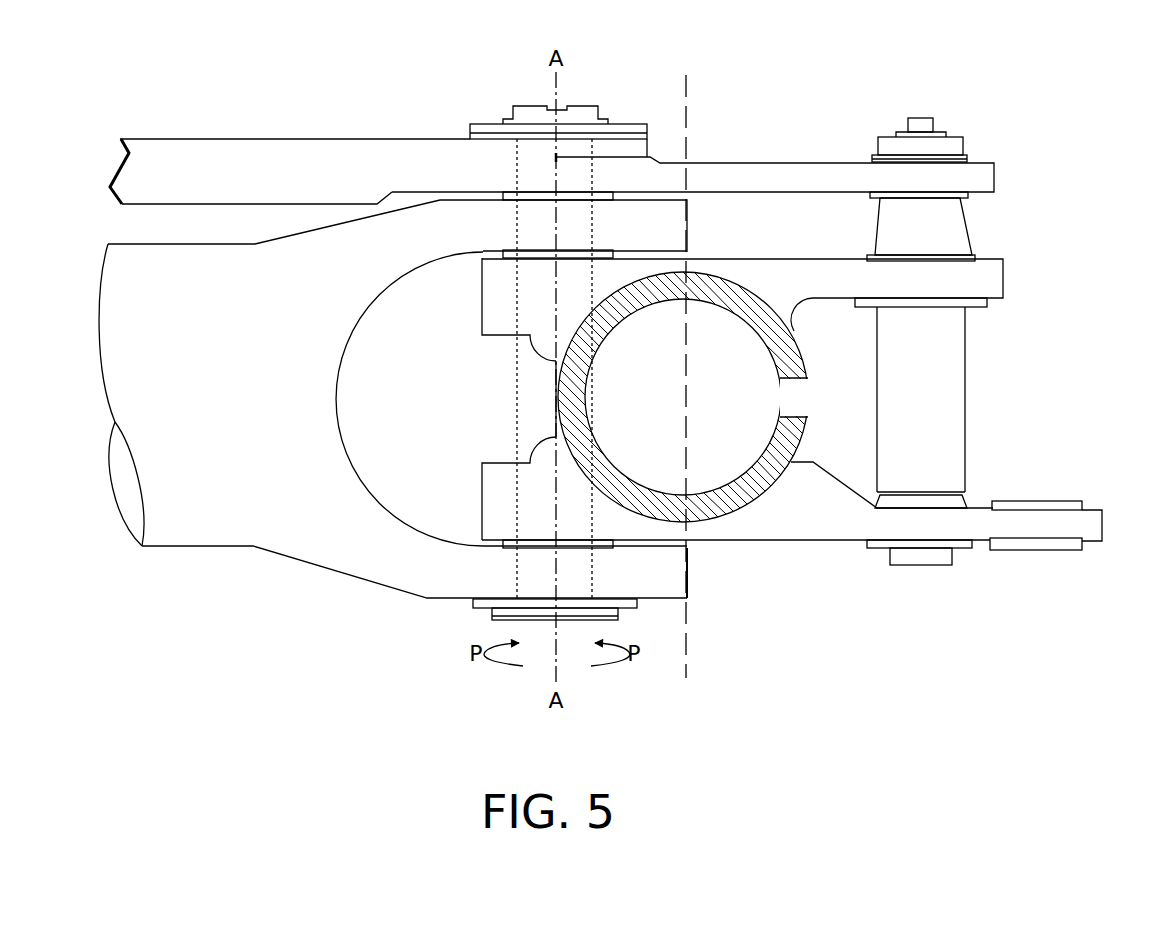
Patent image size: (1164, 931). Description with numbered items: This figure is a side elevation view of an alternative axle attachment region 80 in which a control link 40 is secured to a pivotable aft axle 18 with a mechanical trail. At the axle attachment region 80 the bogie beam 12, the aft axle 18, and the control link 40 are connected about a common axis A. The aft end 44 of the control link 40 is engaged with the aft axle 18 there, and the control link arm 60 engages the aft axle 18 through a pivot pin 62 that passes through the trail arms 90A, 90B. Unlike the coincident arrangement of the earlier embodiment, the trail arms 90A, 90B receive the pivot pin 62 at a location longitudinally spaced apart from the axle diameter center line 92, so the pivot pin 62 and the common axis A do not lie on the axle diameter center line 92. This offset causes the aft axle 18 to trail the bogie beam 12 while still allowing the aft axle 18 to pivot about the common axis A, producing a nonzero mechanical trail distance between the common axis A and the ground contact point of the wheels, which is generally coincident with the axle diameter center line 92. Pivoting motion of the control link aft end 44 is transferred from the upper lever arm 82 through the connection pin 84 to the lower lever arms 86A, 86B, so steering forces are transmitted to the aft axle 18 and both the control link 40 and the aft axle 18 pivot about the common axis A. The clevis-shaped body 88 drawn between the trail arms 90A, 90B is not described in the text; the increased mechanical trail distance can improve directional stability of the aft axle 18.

The bogie beam 12 is at (117, 508).
The control link 40 is at (156, 134).
The control link arm 60 is at (283, 158).
The aft end 44 is at (398, 166).
The axle attachment region 80 is at (733, 106).
The upper lever arm 82 is at (976, 180).
The connection pin 84 is at (968, 404).
The lower lever arm 86A is at (823, 285).
The lower lever arm 86B is at (825, 522).
The clevis body 88 is at (500, 363).
The trail arm 90A is at (482, 316).
The trail arm 90B is at (482, 500).
The pivot pin 62 is at (517, 421).
The aft axle 18 is at (778, 435).
The axle diameter center line 92 is at (688, 660).